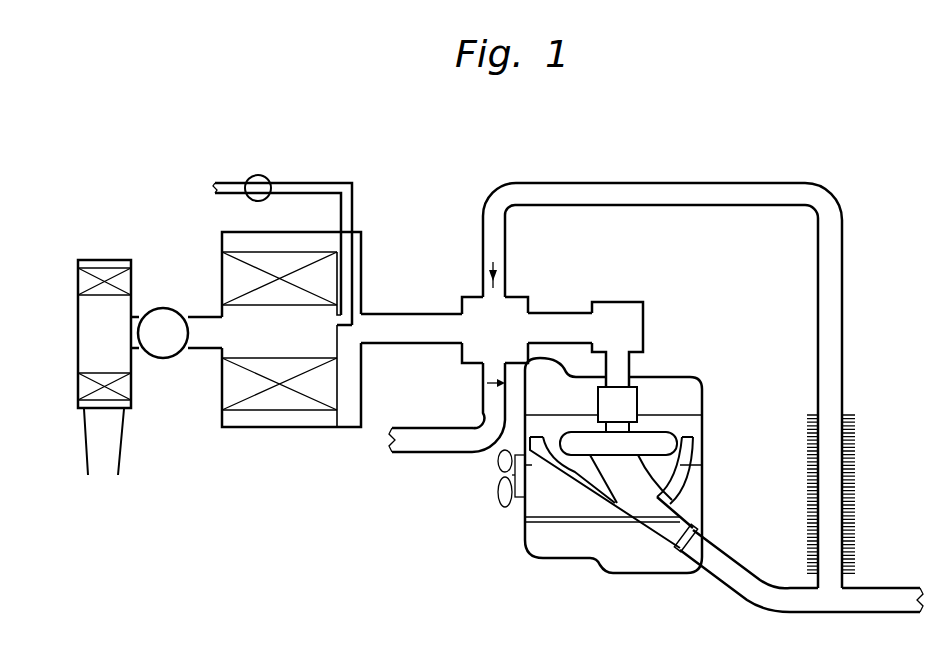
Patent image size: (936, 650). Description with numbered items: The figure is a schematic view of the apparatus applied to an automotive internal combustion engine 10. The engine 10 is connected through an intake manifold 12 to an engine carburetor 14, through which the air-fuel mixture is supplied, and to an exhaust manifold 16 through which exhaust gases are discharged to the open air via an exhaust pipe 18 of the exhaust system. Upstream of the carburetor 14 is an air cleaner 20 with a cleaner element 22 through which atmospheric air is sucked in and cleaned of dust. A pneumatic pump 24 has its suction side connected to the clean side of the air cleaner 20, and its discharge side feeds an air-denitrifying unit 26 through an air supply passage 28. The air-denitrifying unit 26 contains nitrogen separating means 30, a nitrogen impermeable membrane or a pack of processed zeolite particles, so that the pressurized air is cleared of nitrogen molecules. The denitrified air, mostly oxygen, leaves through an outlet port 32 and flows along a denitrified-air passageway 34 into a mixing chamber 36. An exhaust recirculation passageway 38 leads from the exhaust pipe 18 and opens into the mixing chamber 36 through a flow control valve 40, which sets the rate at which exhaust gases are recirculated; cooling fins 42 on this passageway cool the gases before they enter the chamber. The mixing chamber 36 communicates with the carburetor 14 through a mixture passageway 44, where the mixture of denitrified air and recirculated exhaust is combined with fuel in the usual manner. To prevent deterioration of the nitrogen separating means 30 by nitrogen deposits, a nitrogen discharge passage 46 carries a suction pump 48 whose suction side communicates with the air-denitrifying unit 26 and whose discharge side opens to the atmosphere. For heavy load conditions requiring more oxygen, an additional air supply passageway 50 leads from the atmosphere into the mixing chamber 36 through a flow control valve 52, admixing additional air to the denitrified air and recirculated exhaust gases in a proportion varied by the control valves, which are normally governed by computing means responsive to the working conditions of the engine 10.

The internal combustion engine 10 is at (527, 507).
The intake manifold 12 is at (668, 432).
The engine carburetor 14 is at (637, 398).
The exhaust manifold 16 is at (675, 514).
The exhaust pipe 18 is at (748, 598).
The air cleaner 20 is at (107, 260).
The cleaner element 22 is at (95, 296).
The pneumatic pump 24 is at (165, 308).
The air-denitrifying unit 26 is at (294, 428).
The air supply passage 28 is at (212, 338).
The nitrogen separating means 30 is at (245, 412).
The outlet port 32 is at (372, 314).
The denitrified-air passageway 34 is at (427, 313).
The mixing chamber 36 is at (520, 295).
The exhaust recirculation passageway 38 is at (727, 205).
The flow control valve 40 is at (492, 270).
The cooling fins 42 is at (807, 443).
The mixture passageway 44 is at (628, 300).
The nitrogen discharge passage 46 is at (353, 208).
The suction pump 48 is at (267, 197).
The additional air supply passageway 50 is at (412, 443).
The flow control valve 52 is at (485, 380).